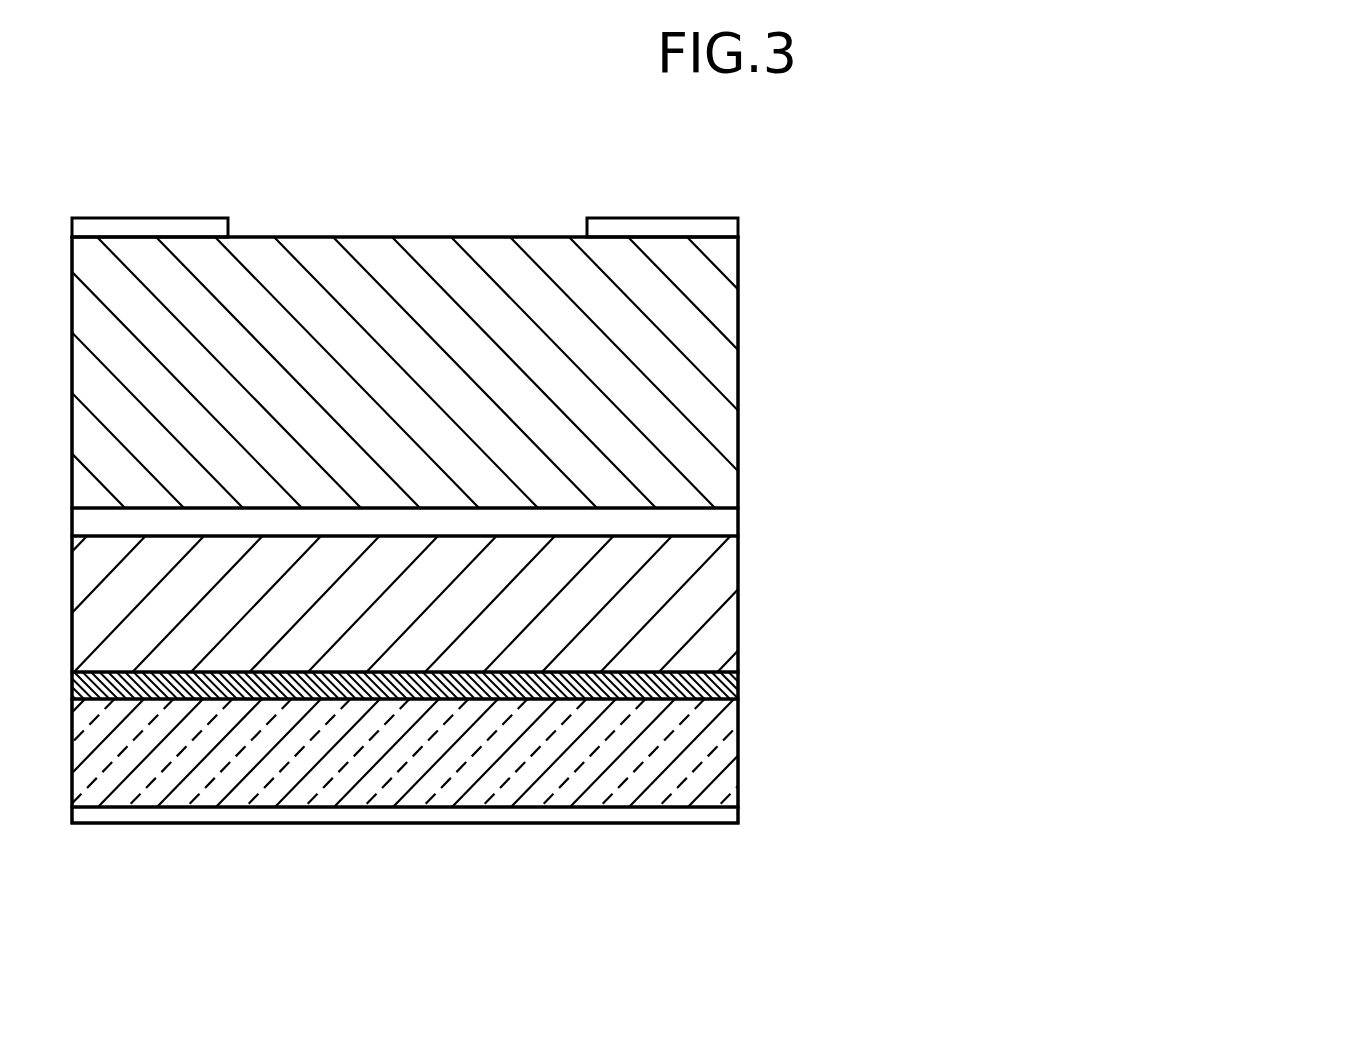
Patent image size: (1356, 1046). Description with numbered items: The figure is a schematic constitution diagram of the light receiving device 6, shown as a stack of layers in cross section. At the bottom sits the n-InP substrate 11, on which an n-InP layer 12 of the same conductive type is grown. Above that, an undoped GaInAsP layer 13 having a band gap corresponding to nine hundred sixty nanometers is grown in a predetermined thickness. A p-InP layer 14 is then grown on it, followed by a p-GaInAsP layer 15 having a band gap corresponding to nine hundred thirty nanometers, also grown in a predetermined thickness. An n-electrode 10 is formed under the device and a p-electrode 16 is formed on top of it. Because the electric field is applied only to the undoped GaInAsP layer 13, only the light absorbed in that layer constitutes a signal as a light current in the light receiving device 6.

The light receiving device 6 is at (405, 460).
The n-electrode 10 is at (405, 860).
The n-InP substrate 11 is at (431, 753).
The n-InP layer 12 is at (455, 667).
The undoped GaInAsP layer 13 is at (669, 604).
The p-InP layer 14 is at (471, 502).
The p-GaInAsP layer 15 is at (592, 372).
The p-electrode 16 is at (412, 178).